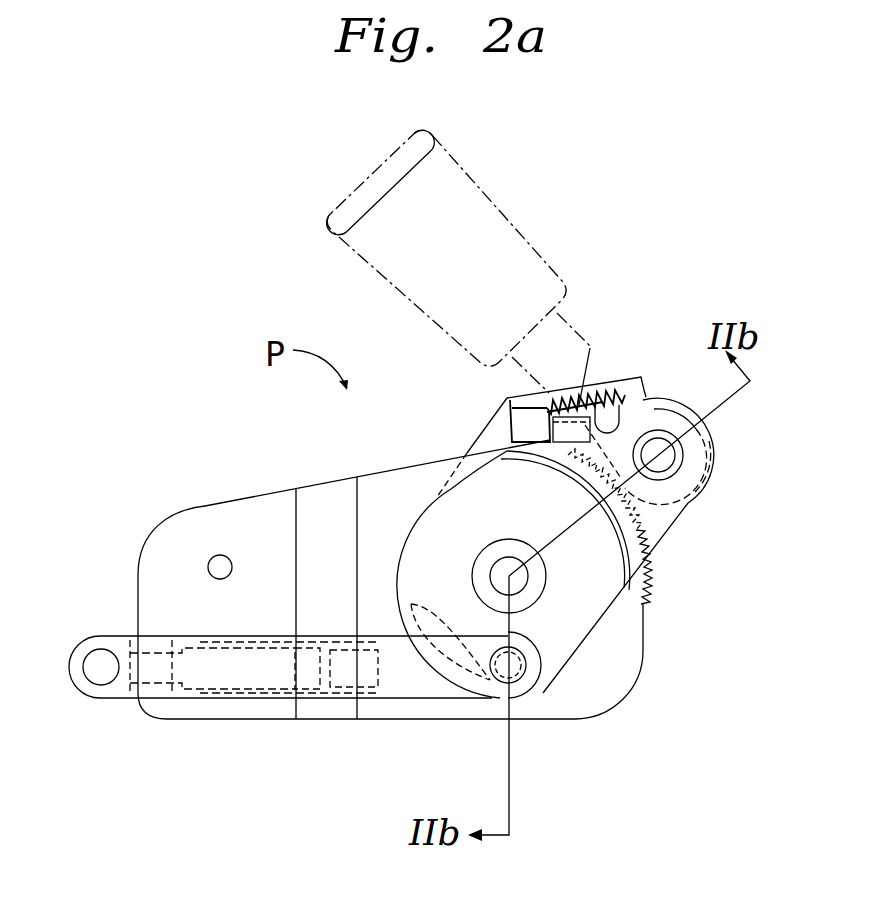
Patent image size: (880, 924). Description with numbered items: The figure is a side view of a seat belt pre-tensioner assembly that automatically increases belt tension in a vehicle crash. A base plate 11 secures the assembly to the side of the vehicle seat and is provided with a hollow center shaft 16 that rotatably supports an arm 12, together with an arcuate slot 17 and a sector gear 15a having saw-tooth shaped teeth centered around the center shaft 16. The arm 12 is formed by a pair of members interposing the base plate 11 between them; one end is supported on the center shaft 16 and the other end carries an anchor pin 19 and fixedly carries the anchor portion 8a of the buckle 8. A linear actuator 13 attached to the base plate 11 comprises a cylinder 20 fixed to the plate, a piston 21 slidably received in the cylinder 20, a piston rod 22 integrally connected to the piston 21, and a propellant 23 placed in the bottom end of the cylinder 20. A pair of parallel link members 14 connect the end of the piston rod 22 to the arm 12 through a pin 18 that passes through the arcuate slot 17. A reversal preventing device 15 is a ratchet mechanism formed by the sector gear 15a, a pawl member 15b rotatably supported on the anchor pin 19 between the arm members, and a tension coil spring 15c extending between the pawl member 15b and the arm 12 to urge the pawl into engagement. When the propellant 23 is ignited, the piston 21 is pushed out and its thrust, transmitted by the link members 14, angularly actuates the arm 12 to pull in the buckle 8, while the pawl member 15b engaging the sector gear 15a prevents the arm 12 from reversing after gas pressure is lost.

The buckle 8 is at (488, 181).
The anchor portion 8a is at (682, 497).
The base plate 11 is at (317, 489).
The arm 12 is at (423, 530).
The linear actuator 13 is at (241, 703).
The link members 14 is at (397, 694).
The reversal preventing device 15 is at (604, 412).
The sector gear 15a is at (656, 572).
The pawl member 15b is at (574, 436).
The tension coil spring 15c is at (541, 400).
The hollow center shaft 16 is at (540, 574).
The arcuate slot 17 is at (463, 672).
The pin 18 is at (521, 673).
The anchor pin 19 is at (683, 448).
The cylinder 20 is at (271, 645).
The piston 21 is at (310, 690).
The piston rod 22 is at (148, 657).
The propellant 23 is at (349, 692).